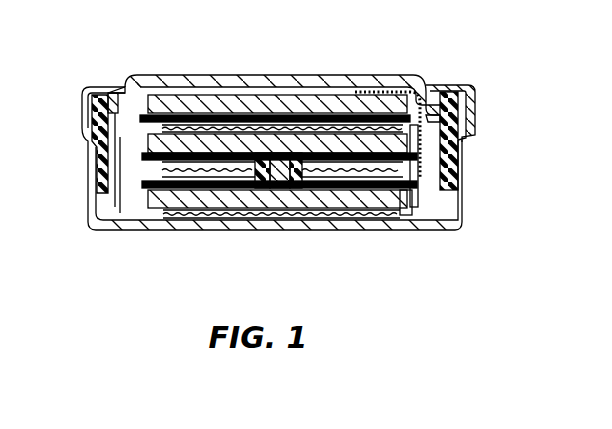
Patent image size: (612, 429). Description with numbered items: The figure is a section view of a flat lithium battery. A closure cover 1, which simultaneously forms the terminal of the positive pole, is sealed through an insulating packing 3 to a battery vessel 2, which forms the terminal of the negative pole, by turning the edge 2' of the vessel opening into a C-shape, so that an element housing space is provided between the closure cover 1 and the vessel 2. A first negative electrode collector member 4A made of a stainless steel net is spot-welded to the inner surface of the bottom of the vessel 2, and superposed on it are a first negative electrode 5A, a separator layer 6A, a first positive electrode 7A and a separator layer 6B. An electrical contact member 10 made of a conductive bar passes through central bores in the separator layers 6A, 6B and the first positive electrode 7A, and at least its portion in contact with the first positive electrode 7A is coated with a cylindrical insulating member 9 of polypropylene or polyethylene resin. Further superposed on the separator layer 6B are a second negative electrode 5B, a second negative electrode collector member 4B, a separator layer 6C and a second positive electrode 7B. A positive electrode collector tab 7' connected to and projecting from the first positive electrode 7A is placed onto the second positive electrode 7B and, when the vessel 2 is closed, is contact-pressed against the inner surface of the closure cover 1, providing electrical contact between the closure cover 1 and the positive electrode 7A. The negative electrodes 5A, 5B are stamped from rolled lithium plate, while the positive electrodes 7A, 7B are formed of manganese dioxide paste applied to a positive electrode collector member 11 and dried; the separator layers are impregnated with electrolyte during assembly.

The closure cover 1 is at (176, 83).
The battery vessel 2 is at (272, 194).
The edge of the opening of the battery vessel 2' is at (463, 90).
The insulating packing 3 is at (92, 87).
The first negative electrode collector member 4A is at (208, 219).
The second negative electrode collector member 4B is at (278, 125).
The first negative electrode 5A is at (400, 212).
The second negative electrode 5B is at (452, 152).
The separator layer 6A is at (142, 185).
The separator layer 6B is at (142, 157).
The separator layer 6C is at (217, 104).
The first positive electrode 7A is at (417, 207).
The second positive electrode 7B is at (330, 115).
The positive electrode collector tab 7' is at (464, 137).
The cylindrical insulating member 9 is at (282, 190).
The electrical contact member 10 is at (264, 190).
The positive electrode collector member 11 is at (297, 190).